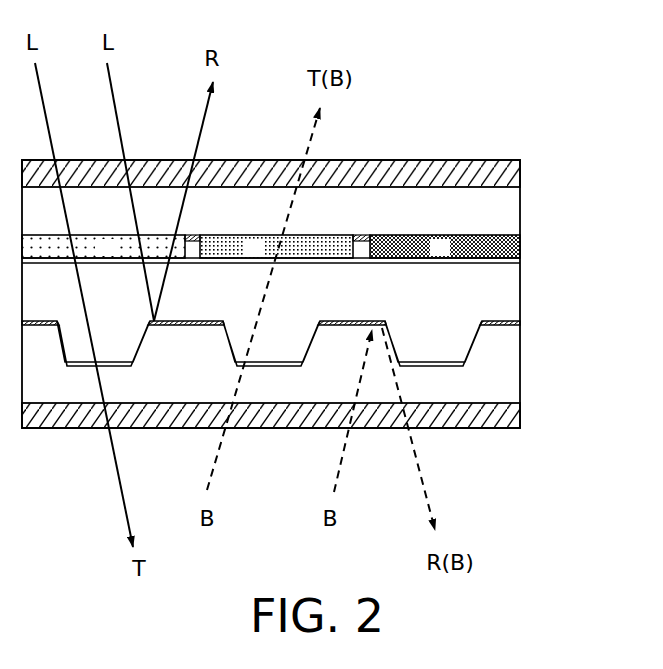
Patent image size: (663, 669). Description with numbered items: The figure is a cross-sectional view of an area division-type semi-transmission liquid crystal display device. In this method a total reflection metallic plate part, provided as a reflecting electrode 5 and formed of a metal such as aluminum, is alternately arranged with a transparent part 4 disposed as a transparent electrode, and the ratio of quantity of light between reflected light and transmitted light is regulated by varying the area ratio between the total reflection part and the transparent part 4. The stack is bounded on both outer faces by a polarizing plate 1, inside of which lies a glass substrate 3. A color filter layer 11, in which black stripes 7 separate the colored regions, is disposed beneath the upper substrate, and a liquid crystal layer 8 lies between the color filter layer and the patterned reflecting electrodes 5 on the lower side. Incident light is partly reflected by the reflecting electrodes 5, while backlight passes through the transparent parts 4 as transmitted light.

The polarizing plate 1 is at (512, 173).
The glass substrate 3 is at (512, 210).
The groove (transmissive region) 4 is at (269, 357).
The reflecting electrode 5 is at (271, 308).
The black stripe 7 is at (192, 236).
The liquid crystal layer 8 is at (510, 292).
The color filter layer 11 is at (518, 247).